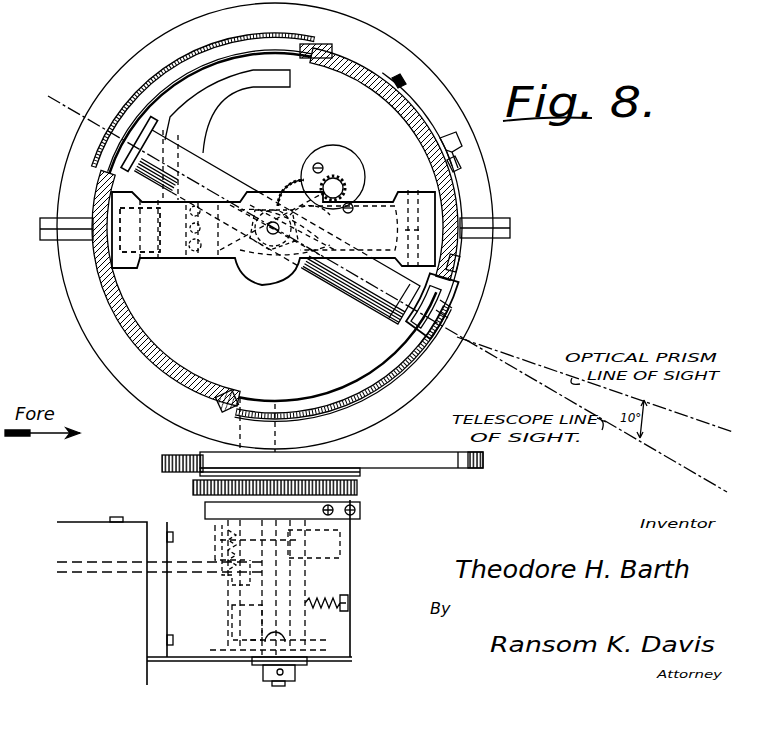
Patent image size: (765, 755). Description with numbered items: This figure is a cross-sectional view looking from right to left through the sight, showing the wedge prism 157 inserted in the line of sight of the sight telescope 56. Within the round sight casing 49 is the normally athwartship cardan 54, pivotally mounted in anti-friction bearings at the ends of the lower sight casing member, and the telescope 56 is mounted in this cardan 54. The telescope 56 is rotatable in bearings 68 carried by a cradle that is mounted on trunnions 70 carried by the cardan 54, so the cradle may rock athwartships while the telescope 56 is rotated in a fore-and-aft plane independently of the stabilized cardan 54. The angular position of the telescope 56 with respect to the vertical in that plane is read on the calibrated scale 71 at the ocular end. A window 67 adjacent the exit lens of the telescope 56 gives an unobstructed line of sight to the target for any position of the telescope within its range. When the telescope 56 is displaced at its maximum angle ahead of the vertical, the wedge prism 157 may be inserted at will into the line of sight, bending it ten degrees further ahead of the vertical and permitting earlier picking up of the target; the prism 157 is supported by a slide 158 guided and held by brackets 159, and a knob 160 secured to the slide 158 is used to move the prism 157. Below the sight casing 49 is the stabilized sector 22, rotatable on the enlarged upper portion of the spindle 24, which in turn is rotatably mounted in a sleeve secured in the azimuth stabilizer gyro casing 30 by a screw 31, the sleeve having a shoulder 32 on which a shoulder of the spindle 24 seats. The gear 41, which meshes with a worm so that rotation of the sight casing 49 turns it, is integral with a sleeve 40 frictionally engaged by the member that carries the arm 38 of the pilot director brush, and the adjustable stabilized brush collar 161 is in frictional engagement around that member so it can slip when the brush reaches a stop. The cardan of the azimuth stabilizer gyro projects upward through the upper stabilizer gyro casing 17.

The upper stabilizer gyro casing 17 is at (118, 629).
The stabilized sector 22 is at (432, 462).
The spindle 24 is at (232, 626).
The azimuth stabilizer gyro casing 30 is at (348, 620).
The screw 31 is at (335, 598).
The shoulder 32 is at (232, 588).
The arm 38 is at (110, 572).
The sleeve 40 is at (340, 534).
The gear 41 is at (190, 488).
The sight casing 49 is at (105, 322).
The cardan 54 is at (172, 256).
The sight telescope 56 is at (214, 178).
The window 67 is at (368, 396).
The bearings 68 is at (270, 272).
The trunnions 70 is at (140, 270).
The calibrated scale 71 is at (257, 76).
The wedge prism 157 is at (462, 327).
The slide 158 is at (456, 191).
The brackets 159 is at (402, 84).
The knob 160 is at (452, 140).
The stabilized brush collar 161 is at (205, 512).